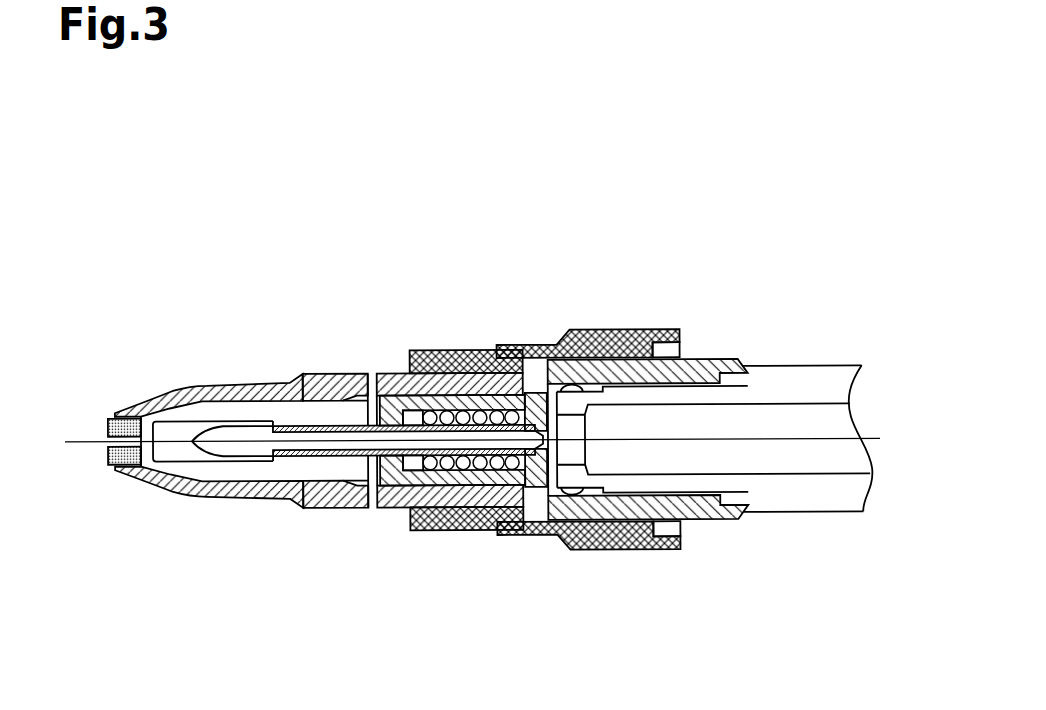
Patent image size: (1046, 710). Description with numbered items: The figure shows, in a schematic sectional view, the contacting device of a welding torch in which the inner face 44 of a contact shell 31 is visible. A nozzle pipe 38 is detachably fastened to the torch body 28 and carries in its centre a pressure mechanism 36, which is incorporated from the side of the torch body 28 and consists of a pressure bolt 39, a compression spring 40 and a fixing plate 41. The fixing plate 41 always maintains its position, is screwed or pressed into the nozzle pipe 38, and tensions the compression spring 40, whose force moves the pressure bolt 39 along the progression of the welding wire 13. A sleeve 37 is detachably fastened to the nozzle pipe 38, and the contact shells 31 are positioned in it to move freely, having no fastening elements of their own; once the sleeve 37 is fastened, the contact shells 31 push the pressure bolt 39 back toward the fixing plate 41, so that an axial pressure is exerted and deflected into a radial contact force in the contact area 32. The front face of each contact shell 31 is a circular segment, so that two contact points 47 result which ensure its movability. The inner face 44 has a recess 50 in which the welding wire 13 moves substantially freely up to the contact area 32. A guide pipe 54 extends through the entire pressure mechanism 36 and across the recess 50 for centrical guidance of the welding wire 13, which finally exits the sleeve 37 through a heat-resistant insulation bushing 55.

The welding wire 13 is at (762, 437).
The torch body 28 is at (795, 457).
The contact shell 31 is at (263, 388).
The contact area 32 is at (177, 430).
The pressure mechanism 36 is at (512, 392).
The sleeve 37 is at (335, 382).
The nozzle pipe 38 is at (550, 508).
The pressure bolt 39 is at (397, 495).
The compression spring 40 is at (472, 463).
The fixing plate 41 is at (545, 382).
The inner face 44 is at (253, 415).
The contact points 47 is at (367, 375).
The recess 50 is at (233, 447).
The guide pipe 54 is at (333, 473).
The insulation bushing 55 is at (128, 463).